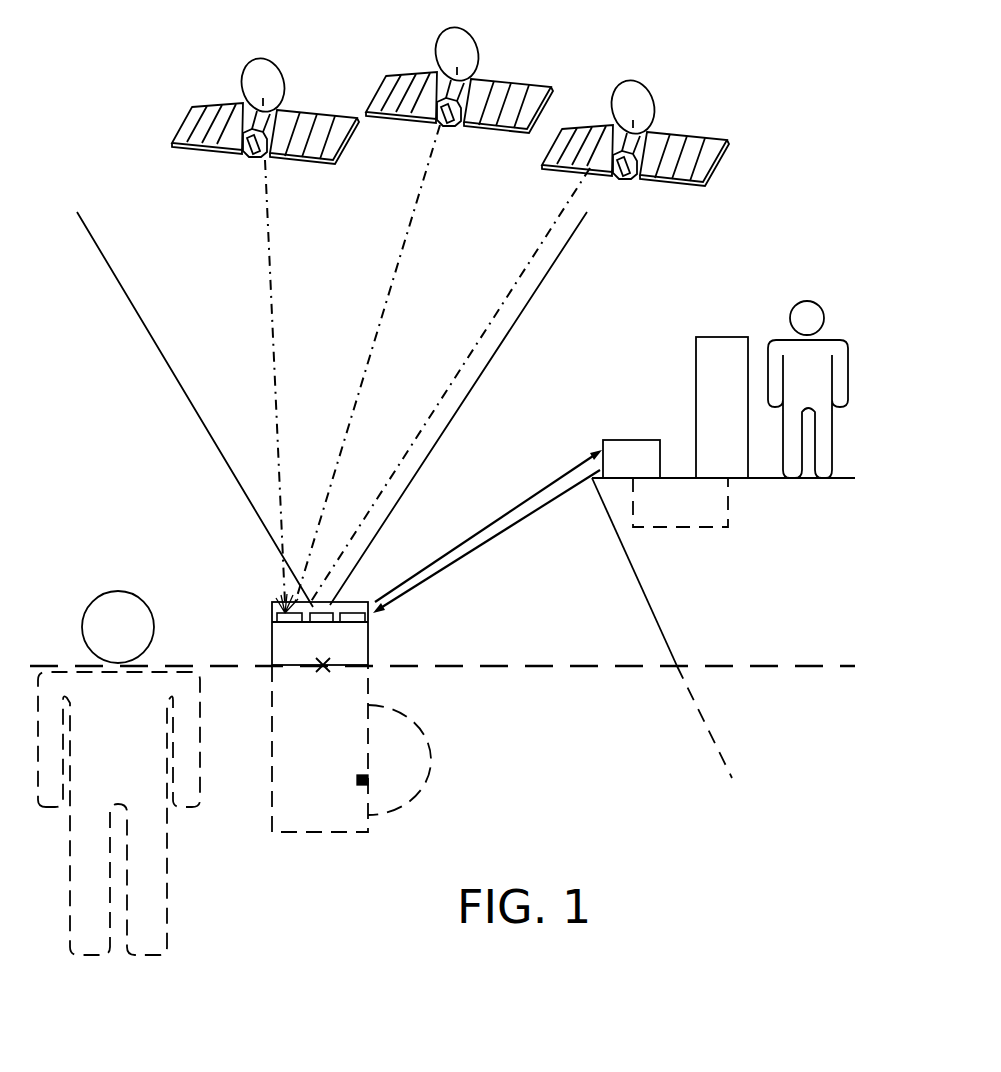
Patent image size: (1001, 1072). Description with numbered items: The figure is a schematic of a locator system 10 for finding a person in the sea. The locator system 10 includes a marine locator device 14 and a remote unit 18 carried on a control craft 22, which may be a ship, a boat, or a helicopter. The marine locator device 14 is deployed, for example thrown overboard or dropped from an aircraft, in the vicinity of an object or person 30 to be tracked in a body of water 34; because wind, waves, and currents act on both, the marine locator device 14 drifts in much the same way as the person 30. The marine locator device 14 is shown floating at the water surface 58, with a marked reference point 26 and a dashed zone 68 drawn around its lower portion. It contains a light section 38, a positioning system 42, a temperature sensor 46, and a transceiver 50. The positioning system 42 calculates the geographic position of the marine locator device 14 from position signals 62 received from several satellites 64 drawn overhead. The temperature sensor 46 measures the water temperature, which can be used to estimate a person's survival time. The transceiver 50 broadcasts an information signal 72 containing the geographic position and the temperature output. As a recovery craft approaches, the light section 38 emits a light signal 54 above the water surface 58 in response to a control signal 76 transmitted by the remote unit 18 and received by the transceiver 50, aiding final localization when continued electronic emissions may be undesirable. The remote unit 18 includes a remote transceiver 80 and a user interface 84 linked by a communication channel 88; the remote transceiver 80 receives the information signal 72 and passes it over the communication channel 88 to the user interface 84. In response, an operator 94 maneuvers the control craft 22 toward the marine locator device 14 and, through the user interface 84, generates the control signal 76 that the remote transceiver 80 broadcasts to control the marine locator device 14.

The locator system 10 is at (112, 162).
The marine locator device 14 is at (366, 592).
The remote unit 18 is at (722, 404).
The control craft 22 is at (628, 562).
The reference point 26 is at (325, 668).
The person 30 is at (140, 598).
The body of water 34 is at (605, 801).
The light section 38 is at (358, 622).
The positioning system 42 is at (277, 600).
The temperature sensor 46 is at (370, 778).
The transceiver 50 is at (325, 609).
The light signal 54 is at (332, 409).
The water surface 58 is at (550, 665).
The position signals 62 is at (268, 268).
The satellites 64 is at (545, 33).
The detection zone 68 is at (428, 785).
The information signal 72 is at (574, 464).
The control signal 76 is at (547, 507).
The remote transceiver 80 is at (635, 440).
The user interface 84 is at (728, 336).
The communication channel 88 is at (730, 500).
The operator 94 is at (823, 317).